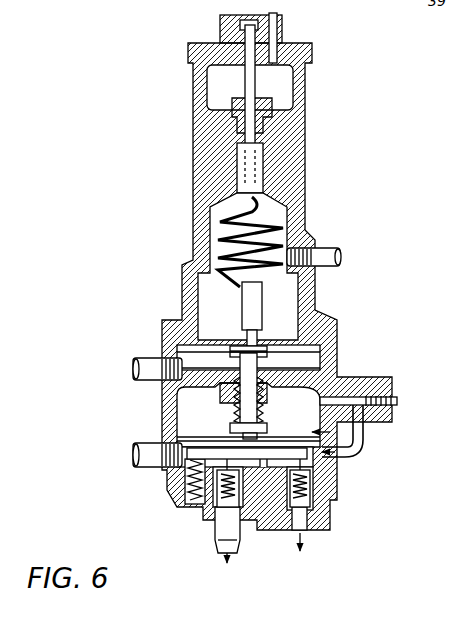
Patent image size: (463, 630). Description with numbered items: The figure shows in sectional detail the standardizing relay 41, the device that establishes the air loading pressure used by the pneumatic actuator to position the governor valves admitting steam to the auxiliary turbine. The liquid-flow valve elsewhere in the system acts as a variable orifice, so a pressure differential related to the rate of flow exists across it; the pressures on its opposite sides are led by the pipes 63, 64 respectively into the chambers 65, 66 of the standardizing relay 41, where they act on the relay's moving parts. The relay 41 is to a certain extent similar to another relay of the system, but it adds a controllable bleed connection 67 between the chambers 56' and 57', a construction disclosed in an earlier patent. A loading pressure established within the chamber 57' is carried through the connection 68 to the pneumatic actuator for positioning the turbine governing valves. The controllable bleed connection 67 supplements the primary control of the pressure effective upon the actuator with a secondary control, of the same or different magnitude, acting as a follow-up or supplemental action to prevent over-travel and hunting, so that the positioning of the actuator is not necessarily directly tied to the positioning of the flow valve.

The standardizing relay 41 is at (192, 133).
The pipe 63 is at (331, 246).
The pipe 64 is at (146, 360).
The chamber 65 is at (262, 314).
The chamber 66 is at (248, 359).
The chamber 56' is at (268, 396).
The chamber 57' is at (248, 446).
The controllable bleed connection 67 is at (364, 449).
The connection 68 is at (145, 453).